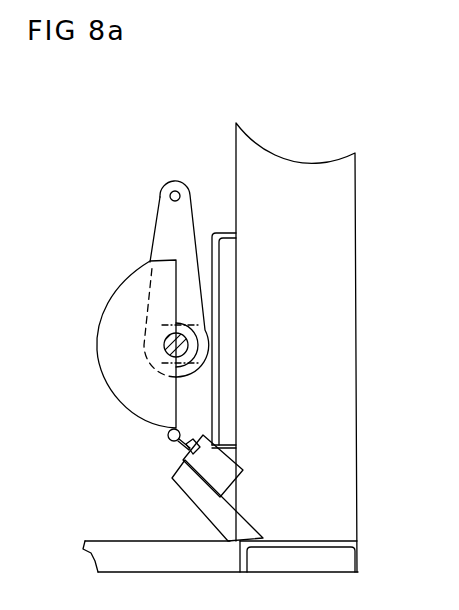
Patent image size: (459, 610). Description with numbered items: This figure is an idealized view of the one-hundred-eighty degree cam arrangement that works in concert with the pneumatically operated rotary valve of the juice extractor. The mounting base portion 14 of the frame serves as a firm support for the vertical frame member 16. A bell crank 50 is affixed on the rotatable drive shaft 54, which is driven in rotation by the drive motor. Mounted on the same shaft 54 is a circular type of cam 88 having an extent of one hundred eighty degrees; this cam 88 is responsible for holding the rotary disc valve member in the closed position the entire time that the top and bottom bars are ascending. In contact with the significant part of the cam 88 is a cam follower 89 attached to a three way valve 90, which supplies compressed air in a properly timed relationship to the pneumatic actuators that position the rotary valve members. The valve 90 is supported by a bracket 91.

The mounting base portion 14 is at (110, 558).
The vertical frame member 16 is at (315, 178).
The bell crank 50 is at (170, 218).
The rotatable drive shaft 54 is at (165, 356).
The cam 88 is at (110, 338).
The cam follower 89 is at (176, 443).
The three way valve 90 is at (222, 467).
The bracket 91 is at (225, 520).